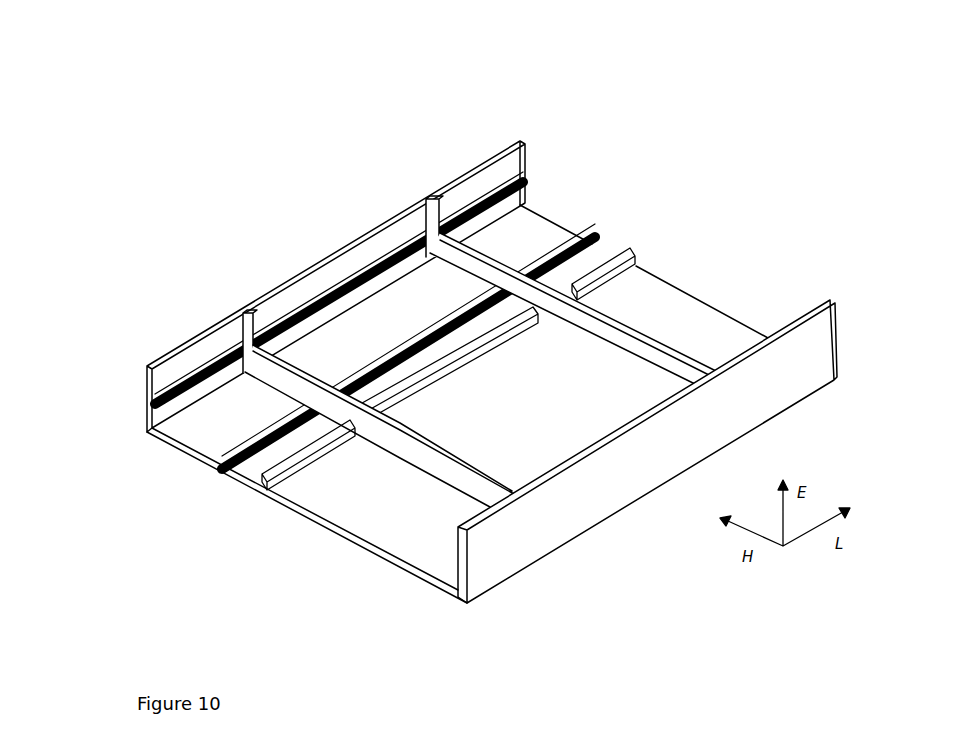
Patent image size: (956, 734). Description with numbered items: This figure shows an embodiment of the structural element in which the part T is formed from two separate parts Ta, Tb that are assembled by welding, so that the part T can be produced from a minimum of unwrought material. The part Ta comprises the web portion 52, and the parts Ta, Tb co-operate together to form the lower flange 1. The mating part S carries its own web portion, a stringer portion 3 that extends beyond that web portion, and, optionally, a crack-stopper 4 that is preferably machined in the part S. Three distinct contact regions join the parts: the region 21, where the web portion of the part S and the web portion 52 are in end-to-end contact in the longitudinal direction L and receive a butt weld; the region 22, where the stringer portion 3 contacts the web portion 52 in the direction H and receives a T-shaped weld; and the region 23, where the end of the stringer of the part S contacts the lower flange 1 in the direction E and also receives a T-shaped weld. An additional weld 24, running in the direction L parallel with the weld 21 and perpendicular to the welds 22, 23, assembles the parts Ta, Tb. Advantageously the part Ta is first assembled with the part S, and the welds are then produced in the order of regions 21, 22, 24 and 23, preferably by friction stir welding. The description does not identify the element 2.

The lower flange 1 is at (406, 230).
The second side wall 2 is at (648, 416).
The stringer portion 3 is at (612, 283).
The crack-stopper 4 is at (665, 216).
The region of contact (butt weld) 21 is at (372, 357).
The region of contact (T-shaped weld in direction H) 22 is at (395, 408).
The region of contact (T-shaped weld in direction E) 23 is at (347, 244).
The longitudinal weld 24 is at (339, 253).
The web portion of part T 52 is at (608, 168).
The part S is at (413, 543).
The part Ta is at (207, 437).
The part Tb is at (206, 349).